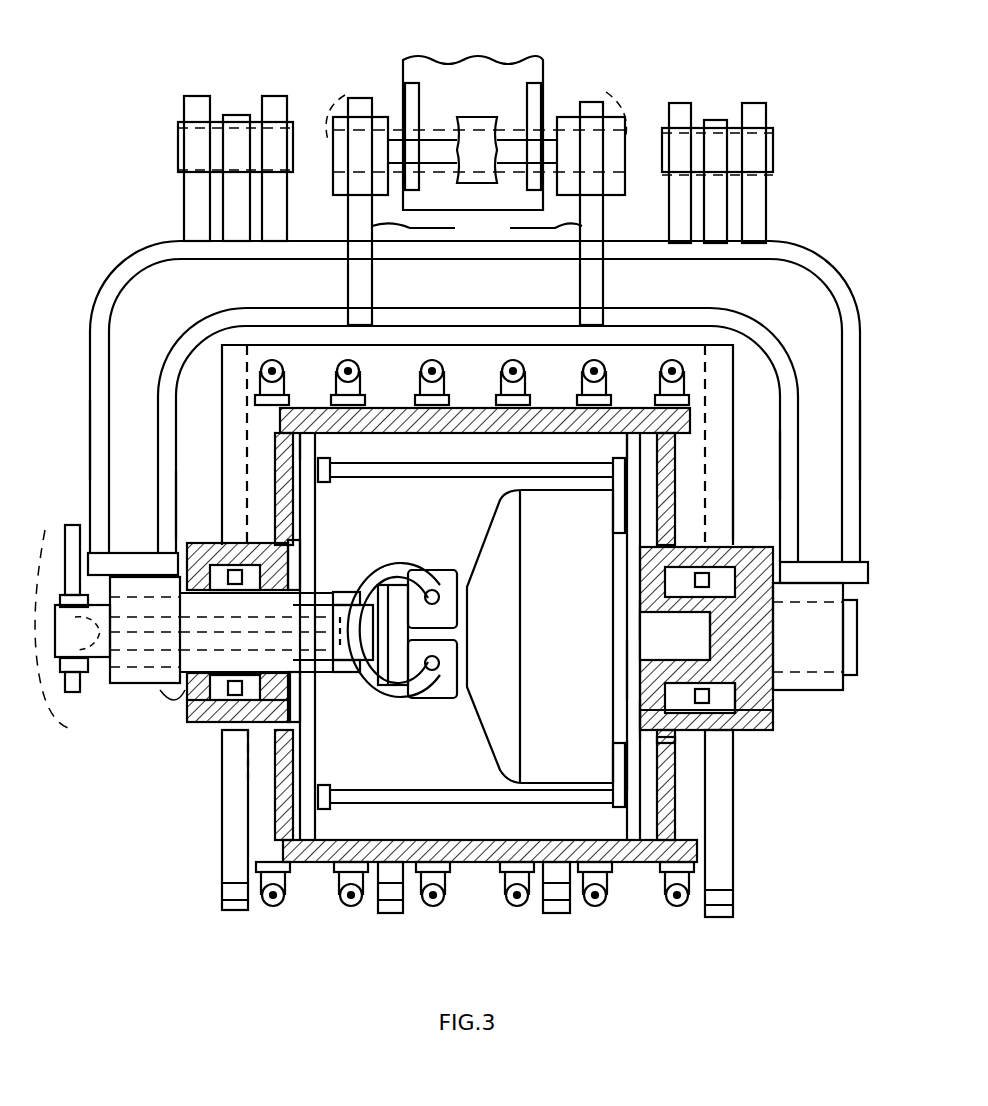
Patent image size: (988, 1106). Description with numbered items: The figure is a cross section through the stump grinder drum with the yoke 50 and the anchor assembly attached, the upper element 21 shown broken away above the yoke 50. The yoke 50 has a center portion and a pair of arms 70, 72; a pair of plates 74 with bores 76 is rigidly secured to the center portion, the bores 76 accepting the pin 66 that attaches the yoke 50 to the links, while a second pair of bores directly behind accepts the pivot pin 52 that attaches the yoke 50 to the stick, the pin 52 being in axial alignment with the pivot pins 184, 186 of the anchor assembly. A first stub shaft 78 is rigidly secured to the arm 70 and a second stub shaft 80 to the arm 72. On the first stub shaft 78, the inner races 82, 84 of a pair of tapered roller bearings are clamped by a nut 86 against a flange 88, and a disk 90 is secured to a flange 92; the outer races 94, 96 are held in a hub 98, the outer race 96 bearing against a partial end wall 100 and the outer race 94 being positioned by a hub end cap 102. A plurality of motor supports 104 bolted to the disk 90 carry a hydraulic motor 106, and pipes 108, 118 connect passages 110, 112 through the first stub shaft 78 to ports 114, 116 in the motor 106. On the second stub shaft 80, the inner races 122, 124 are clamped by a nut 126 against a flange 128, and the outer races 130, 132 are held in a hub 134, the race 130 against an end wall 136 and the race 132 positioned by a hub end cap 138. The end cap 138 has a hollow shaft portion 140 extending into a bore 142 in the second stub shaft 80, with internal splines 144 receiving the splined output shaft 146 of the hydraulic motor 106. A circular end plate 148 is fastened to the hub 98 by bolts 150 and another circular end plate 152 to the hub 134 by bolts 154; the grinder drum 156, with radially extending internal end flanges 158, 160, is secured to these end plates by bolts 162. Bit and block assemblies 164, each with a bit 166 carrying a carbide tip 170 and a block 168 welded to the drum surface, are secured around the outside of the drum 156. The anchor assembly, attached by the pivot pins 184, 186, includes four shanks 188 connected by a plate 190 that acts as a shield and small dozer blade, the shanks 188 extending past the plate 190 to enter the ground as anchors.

The drive housing 21 is at (462, 76).
The yoke 50 is at (128, 262).
The pivot pin 52 is at (474, 140).
The pin 66 is at (548, 130).
The arm 70 is at (90, 438).
The arm 72 is at (858, 432).
The plates 74 is at (479, 179).
The bores 76 is at (640, 84).
The first stub shaft 78 is at (95, 660).
The second stub shaft 80 is at (852, 676).
The inner race 82 is at (245, 672).
The inner race 84 is at (335, 672).
The nut 86 is at (187, 580).
The flange 88 is at (221, 630).
The disk 90 is at (318, 496).
The flange 92 is at (346, 590).
The outer race 94 is at (215, 722).
The outer race 96 is at (240, 722).
The hub 98 is at (258, 735).
The partial end wall 100 is at (310, 725).
The hub end cap 102 is at (185, 690).
The motor supports 104 is at (470, 476).
The hydraulic motor 106 is at (590, 782).
The pipe 108 is at (386, 690).
The passage 110 is at (63, 592).
The passage 112 is at (60, 644).
The port 114 is at (438, 588).
The port 116 is at (440, 668).
The pipe 118 is at (386, 570).
The inner race 122 is at (773, 620).
The inner race 124 is at (773, 657).
The nut 126 is at (773, 725).
The flange 128 is at (616, 595).
The outer race 130 is at (710, 750).
The outer race 132 is at (740, 735).
The hub 134 is at (700, 760).
The end wall 136 is at (640, 730).
The hub end cap 138 is at (773, 702).
The hollow shaft portion 140 is at (650, 698).
The bore 142 is at (675, 636).
The internal splines 144 is at (640, 618).
The splined output shaft 146 is at (630, 655).
The circular end plate 148 is at (275, 470).
The bolts 150 is at (262, 530).
The circular end plate 152 is at (690, 490).
The bolts 154 is at (700, 540).
The grinder drum 156 is at (396, 408).
The internal end flange 158 is at (318, 440).
The internal end flange 160 is at (634, 438).
The bolts 162 is at (275, 445).
The bit and block assemblies 164 is at (670, 372).
The bit 166 is at (351, 910).
The block 168 is at (260, 850).
The carbide tip 170 is at (262, 900).
The pivot pin 184 is at (210, 148).
The pivot pin 186 is at (776, 164).
The shanks 188 is at (236, 118).
The plate 190 is at (455, 379).